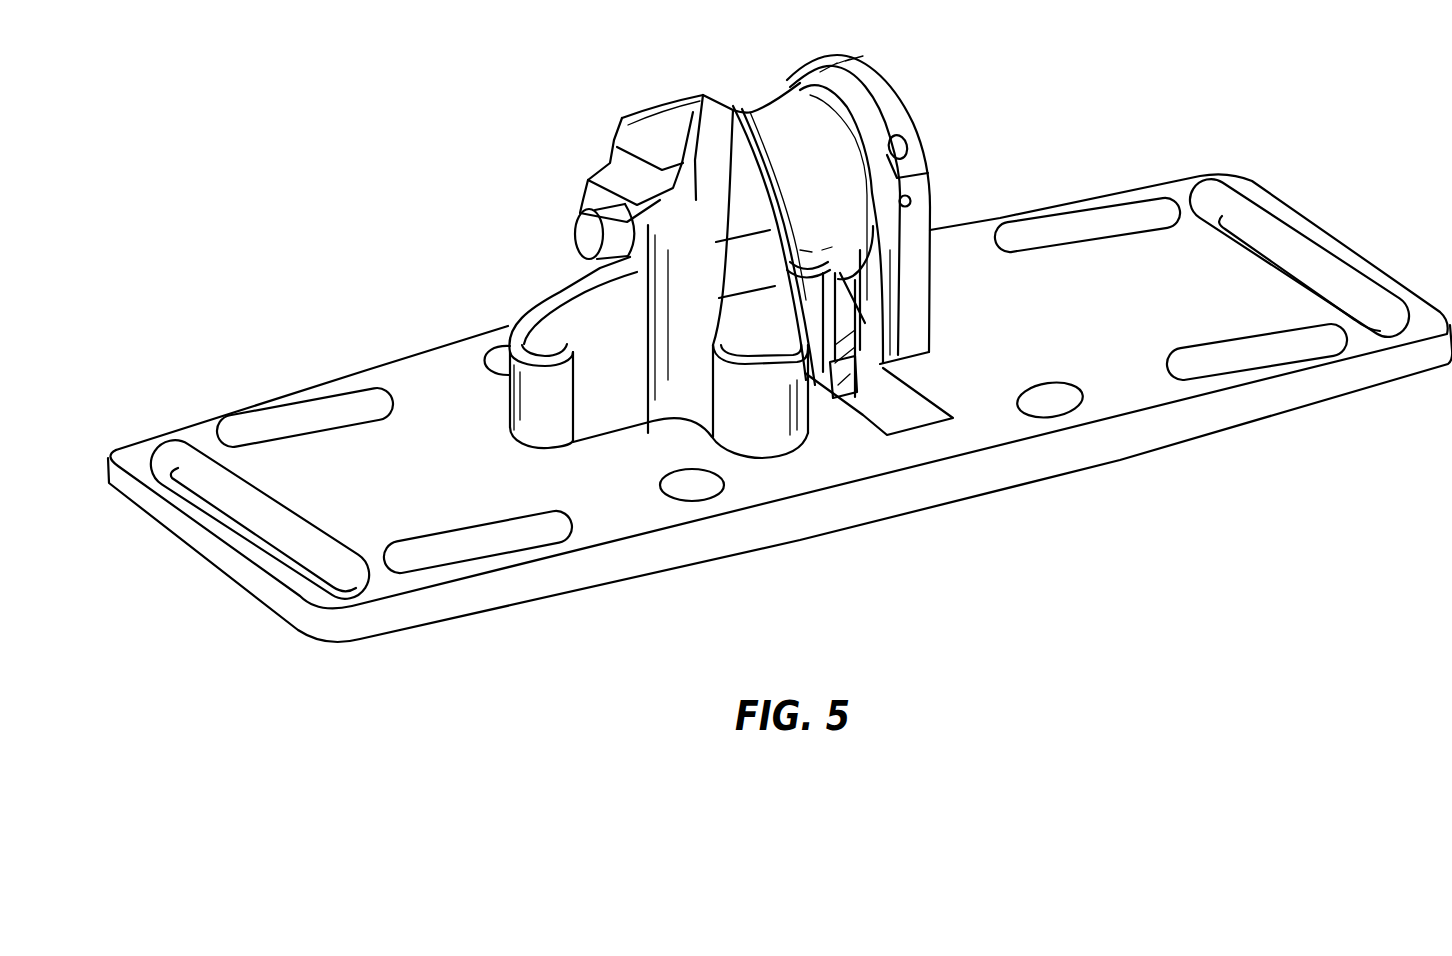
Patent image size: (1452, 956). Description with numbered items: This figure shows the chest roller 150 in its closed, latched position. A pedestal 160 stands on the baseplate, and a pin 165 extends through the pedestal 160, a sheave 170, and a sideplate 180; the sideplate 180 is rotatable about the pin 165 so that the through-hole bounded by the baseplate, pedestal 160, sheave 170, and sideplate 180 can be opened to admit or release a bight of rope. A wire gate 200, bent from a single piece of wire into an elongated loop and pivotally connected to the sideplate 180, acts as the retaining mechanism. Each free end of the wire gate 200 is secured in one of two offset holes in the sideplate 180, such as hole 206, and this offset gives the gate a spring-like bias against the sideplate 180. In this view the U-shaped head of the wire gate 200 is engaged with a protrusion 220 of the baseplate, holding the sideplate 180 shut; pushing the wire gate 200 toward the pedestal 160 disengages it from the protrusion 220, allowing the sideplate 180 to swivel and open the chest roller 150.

The chest roller 150 is at (343, 240).
The pedestal 160 is at (653, 132).
The pin 165 is at (583, 236).
The sheave 170 is at (846, 178).
The sideplate 180 is at (873, 118).
The hole 206 is at (913, 202).
The wire gate 200 is at (893, 400).
The protrusion 220 is at (830, 400).